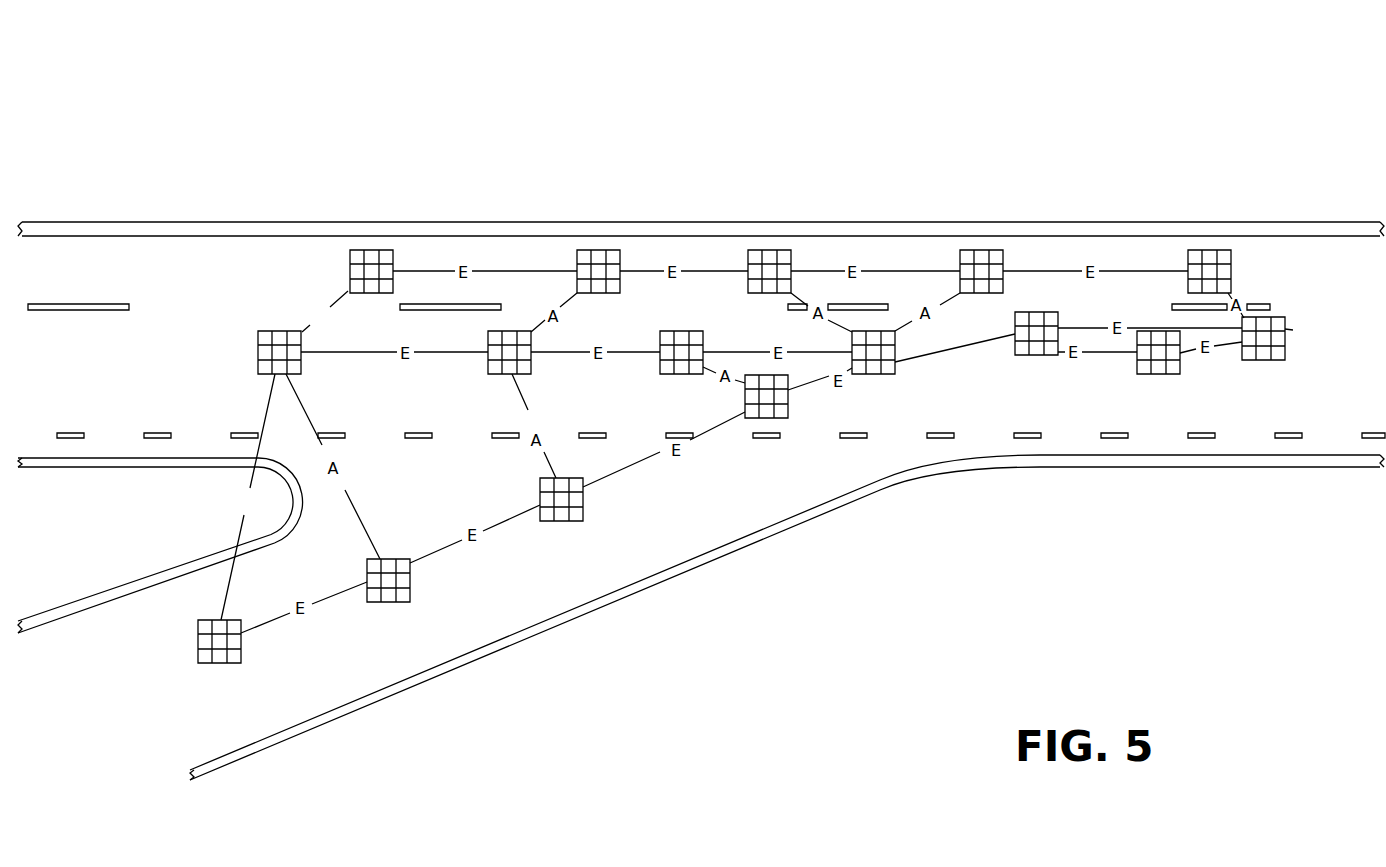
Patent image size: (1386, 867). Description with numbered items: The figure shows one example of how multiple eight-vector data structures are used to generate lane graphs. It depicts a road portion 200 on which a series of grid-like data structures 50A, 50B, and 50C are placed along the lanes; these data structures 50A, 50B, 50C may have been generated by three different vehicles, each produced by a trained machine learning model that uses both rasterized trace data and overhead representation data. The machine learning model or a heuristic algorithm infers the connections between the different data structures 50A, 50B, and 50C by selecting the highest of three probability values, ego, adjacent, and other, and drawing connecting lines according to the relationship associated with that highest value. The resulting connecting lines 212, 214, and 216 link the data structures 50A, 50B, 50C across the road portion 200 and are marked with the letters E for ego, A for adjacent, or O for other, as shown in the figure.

The road portion 200 is at (848, 612).
The connecting line 212 is at (500, 523).
The connecting line 214 is at (263, 418).
The connecting line 216 is at (348, 290).
The data structure 50A is at (222, 642).
The data structure 50B is at (277, 350).
The data structure 50C is at (371, 270).